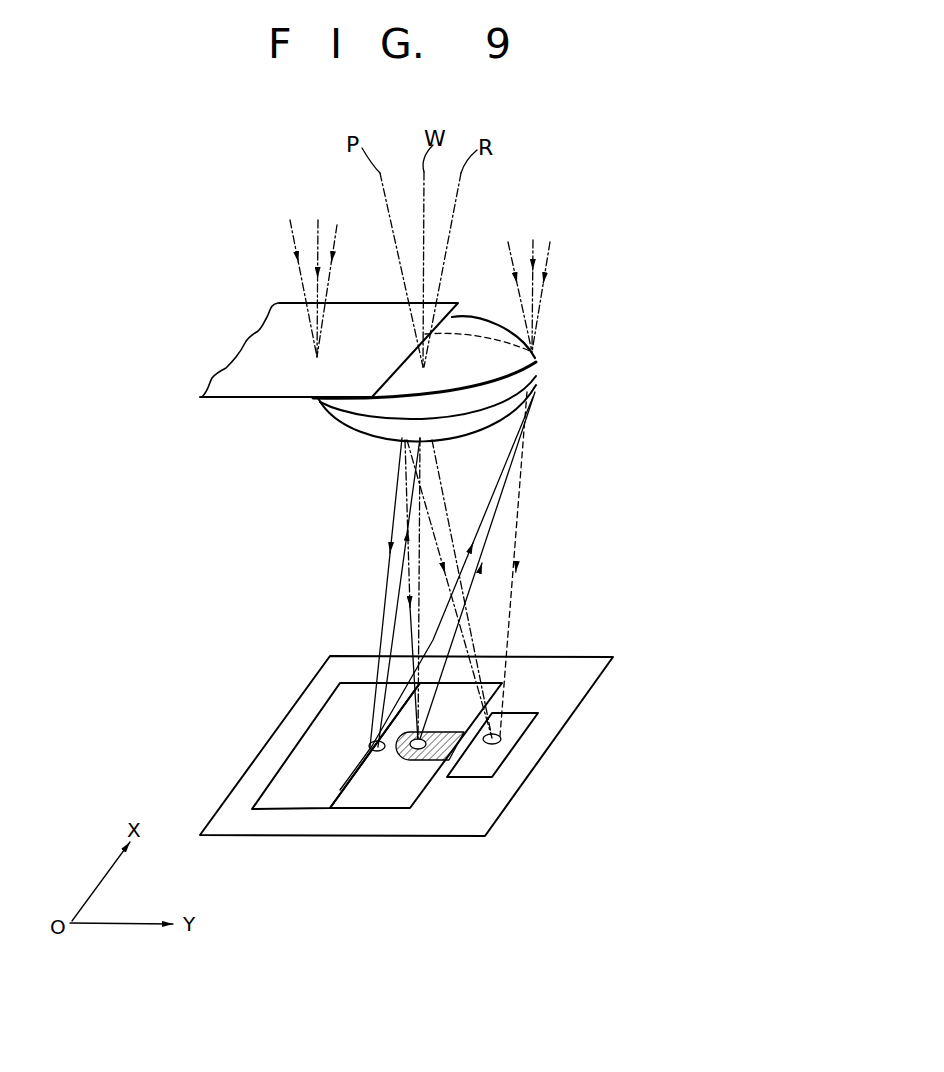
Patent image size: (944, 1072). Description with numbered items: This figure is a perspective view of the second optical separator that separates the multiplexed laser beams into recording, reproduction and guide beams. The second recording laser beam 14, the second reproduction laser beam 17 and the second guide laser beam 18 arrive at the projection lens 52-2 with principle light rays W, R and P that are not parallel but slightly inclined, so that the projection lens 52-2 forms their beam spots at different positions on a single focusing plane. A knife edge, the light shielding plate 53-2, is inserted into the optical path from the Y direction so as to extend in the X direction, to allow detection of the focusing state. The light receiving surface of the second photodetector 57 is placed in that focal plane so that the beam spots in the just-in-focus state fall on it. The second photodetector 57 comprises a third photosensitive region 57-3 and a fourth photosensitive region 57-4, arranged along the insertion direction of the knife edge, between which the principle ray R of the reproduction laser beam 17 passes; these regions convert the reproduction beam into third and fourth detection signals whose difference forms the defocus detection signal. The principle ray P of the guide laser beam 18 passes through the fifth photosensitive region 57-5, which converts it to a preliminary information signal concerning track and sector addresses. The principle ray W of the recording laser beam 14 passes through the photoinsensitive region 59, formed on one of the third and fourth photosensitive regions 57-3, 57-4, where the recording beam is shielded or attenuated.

The projection lens 52-2 is at (540, 372).
The light shielding plate 53-2 is at (280, 397).
The second recording laser beam 14 is at (513, 463).
The second reproduction laser beam 17 is at (497, 482).
The second guide laser beam 18 is at (522, 506).
The second photodetector 57 is at (556, 655).
The third photosensitive region 57-3 is at (288, 808).
The fourth photosensitive region 57-4 is at (378, 808).
The fifth photosensitive region 57-5 is at (514, 740).
The photoinsensitive region 59 is at (436, 763).